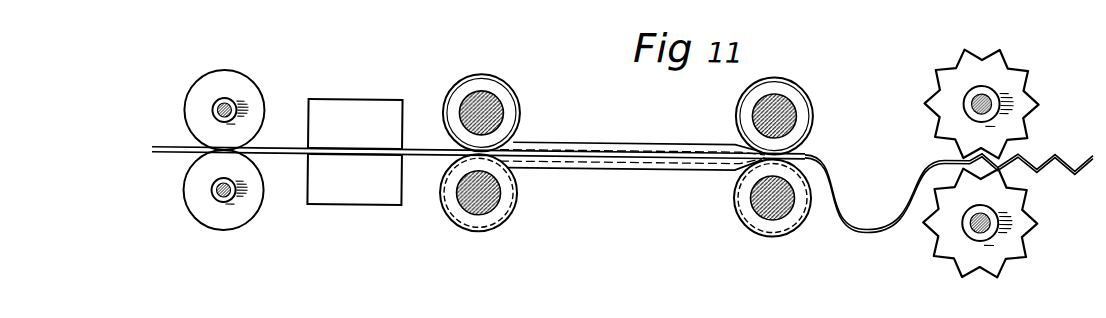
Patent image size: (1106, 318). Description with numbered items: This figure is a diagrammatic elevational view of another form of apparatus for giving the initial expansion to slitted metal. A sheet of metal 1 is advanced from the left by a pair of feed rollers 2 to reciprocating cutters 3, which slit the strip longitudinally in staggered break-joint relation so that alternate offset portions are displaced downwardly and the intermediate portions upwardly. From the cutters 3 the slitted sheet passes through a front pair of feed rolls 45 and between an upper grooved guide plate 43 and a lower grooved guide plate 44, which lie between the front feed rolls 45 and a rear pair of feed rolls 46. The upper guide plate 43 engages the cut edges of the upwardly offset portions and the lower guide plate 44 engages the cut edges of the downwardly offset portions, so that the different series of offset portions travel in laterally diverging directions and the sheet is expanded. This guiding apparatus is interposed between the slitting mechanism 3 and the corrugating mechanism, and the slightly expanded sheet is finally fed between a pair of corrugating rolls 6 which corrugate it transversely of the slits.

The sheet of metal 1 is at (175, 154).
The feed rollers 2 is at (252, 94).
The reciprocating cutters 3 is at (372, 110).
The corrugating rolls 6 is at (1015, 78).
The upper grooved guide plate 43 is at (642, 142).
The lower grooved guide plate 44 is at (657, 164).
The front pair of feed rolls 45 is at (502, 90).
The rear pair of feed rolls 46 is at (793, 94).